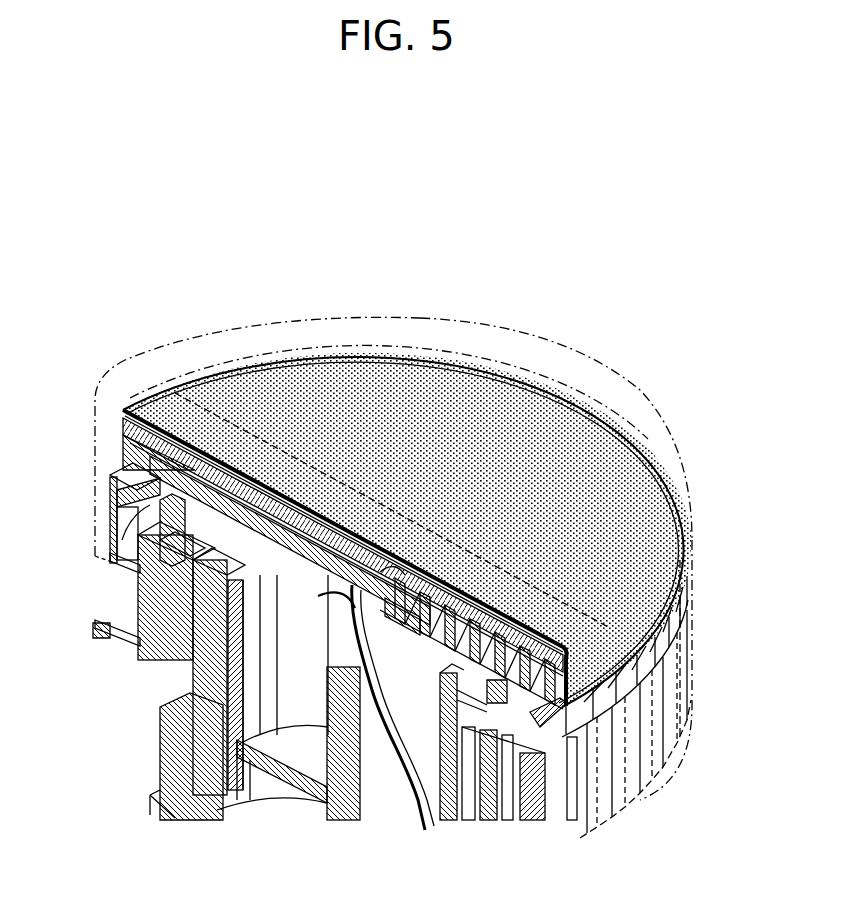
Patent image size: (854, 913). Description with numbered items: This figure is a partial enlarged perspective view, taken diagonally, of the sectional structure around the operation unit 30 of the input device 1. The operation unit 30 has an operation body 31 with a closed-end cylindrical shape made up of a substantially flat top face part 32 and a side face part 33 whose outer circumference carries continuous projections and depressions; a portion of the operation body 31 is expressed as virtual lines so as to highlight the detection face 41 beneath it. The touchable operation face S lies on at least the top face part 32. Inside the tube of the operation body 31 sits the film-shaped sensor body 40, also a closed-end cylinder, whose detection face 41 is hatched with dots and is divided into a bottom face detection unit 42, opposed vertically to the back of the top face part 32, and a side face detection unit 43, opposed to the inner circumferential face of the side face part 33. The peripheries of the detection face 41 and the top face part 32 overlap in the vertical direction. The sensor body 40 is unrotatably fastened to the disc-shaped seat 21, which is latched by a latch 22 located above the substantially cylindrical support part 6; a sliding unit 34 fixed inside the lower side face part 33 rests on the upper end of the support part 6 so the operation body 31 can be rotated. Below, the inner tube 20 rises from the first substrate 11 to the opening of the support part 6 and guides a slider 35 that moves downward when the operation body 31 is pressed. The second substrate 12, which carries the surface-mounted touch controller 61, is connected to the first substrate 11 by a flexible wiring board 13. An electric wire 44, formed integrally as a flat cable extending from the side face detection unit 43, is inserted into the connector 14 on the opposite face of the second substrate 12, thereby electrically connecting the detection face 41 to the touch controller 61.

The input device 1 is at (478, 236).
The operation unit 30 is at (527, 325).
The operation body 31 is at (592, 384).
The top face part 32 is at (176, 322).
The side face part 33 is at (640, 800).
The operation face S is at (234, 322).
The detection face 41 is at (350, 396).
The bottom face detection unit 42 is at (426, 388).
The sensor body 40 is at (117, 462).
The sliding unit 34 is at (115, 488).
The seat 21 is at (115, 515).
The latch 22 is at (115, 551).
The support part 6 is at (140, 586).
The inner tube 20 is at (192, 676).
The first substrate 11 is at (160, 822).
The slider 35 is at (335, 822).
The touch controller 61 is at (325, 595).
The flexible wiring board 13 is at (417, 790).
The connector 14 is at (395, 570).
The second substrate 12 is at (438, 654).
The electric wire 44 is at (498, 724).
The side face detection unit 43 is at (650, 665).